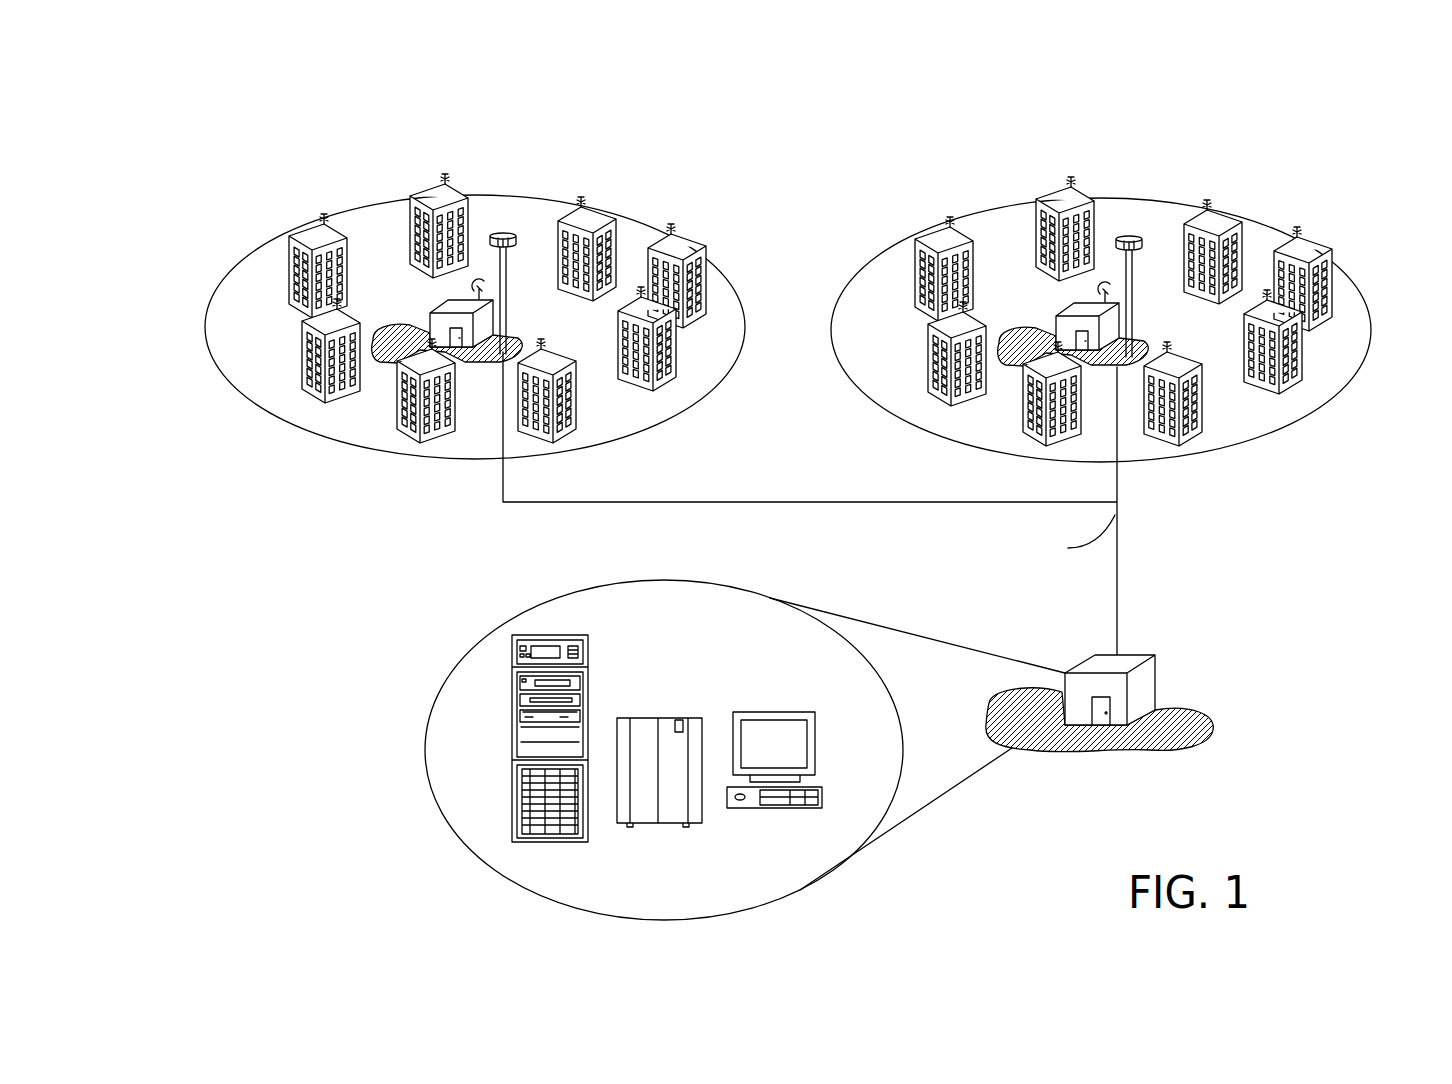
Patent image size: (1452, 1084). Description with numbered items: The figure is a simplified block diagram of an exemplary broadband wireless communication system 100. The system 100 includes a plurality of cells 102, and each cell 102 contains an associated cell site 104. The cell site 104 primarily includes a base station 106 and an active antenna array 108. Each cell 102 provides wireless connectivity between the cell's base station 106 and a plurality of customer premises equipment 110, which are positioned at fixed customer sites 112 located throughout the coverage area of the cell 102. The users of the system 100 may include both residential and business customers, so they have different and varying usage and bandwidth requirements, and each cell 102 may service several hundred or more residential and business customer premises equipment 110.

The broadband wireless communication system 100 is at (338, 682).
The cell 102 is at (275, 398).
The cell site 104 is at (393, 357).
The base station 106 is at (452, 300).
The active antenna array 108 is at (506, 228).
The customer premises equipment 110 is at (335, 237).
The fixed customer site 112 is at (437, 190).